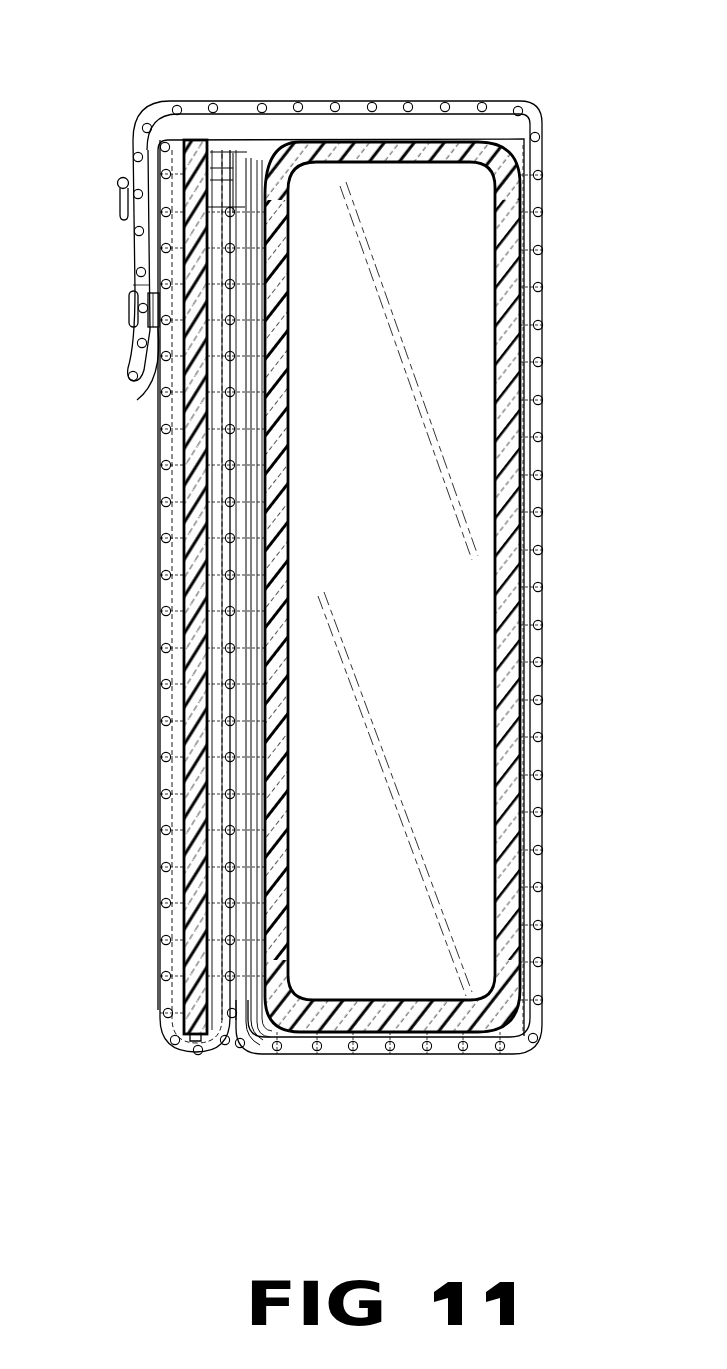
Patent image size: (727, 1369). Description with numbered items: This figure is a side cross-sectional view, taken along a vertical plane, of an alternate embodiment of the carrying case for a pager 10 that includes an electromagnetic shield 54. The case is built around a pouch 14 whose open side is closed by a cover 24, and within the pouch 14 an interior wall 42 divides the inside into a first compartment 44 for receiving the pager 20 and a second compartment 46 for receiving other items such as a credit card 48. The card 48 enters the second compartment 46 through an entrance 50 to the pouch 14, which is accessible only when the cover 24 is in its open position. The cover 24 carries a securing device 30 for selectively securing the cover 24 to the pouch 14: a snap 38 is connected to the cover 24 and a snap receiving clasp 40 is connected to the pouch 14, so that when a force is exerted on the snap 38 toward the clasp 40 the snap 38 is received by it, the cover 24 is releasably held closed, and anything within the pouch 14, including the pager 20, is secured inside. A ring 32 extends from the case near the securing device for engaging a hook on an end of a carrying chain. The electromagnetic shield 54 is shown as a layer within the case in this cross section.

The carrying case for a pager 10 is at (544, 94).
The pouch 14 is at (544, 322).
The pager 20 is at (450, 228).
The cover 24 is at (279, 102).
The securing device 30 is at (113, 288).
The ring 32 is at (120, 208).
The snap 38 is at (133, 322).
The snap receiving clasp 40 is at (148, 388).
The interior wall 42 is at (247, 158).
The first compartment 44 is at (462, 112).
The second compartment 46 is at (219, 148).
The credit card 48 is at (195, 608).
The entrance 50 is at (387, 112).
The electromagnetic shield 54 is at (232, 738).